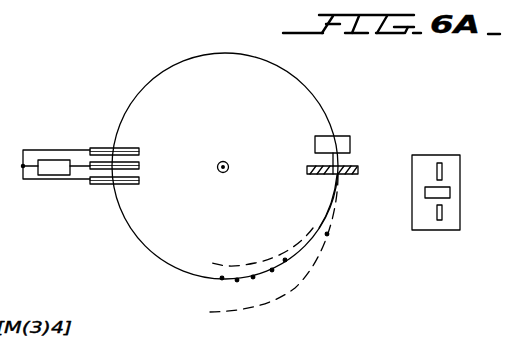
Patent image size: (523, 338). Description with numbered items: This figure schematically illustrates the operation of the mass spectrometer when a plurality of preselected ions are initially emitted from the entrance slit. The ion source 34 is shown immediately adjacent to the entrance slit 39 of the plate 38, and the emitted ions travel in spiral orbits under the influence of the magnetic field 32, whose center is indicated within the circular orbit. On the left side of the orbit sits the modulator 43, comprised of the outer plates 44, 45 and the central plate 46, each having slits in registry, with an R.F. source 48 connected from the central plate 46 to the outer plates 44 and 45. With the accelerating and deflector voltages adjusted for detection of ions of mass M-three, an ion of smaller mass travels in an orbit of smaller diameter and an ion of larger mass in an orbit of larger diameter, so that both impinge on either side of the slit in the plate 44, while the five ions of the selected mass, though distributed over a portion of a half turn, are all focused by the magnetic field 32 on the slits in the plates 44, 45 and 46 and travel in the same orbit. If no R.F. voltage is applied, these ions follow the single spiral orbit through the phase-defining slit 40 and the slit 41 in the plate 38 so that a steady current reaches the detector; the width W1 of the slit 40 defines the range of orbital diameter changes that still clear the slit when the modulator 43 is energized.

The magnetic field 32 is at (226, 161).
The ion source 34 is at (345, 136).
The plate 38 is at (461, 163).
The entrance slit 39 is at (337, 175).
The phase-defining slit 40 is at (441, 188).
The slit 41 is at (443, 213).
The modulator 43 is at (96, 144).
The plate 44 is at (139, 181).
The plate 45 is at (139, 150).
The central plate 46 is at (139, 166).
The R.F. source 48 is at (56, 176).
The width of phase-defining slit W1 is at (451, 193).